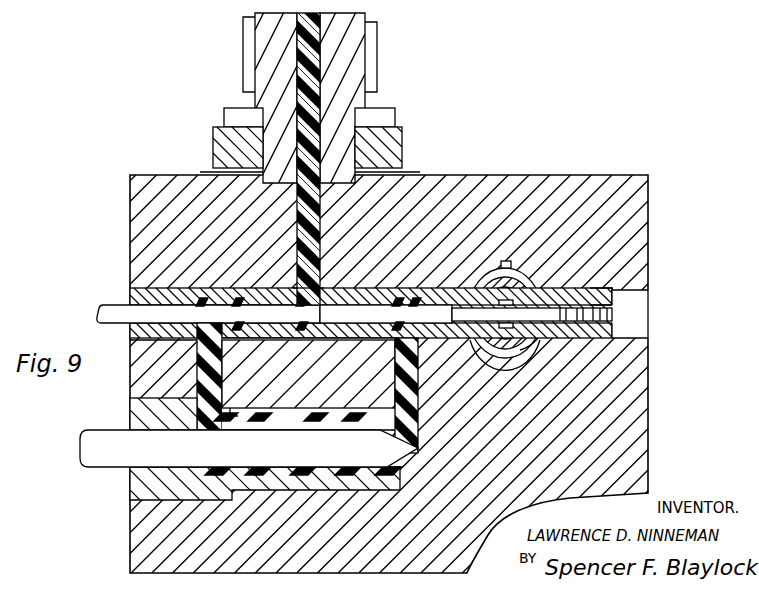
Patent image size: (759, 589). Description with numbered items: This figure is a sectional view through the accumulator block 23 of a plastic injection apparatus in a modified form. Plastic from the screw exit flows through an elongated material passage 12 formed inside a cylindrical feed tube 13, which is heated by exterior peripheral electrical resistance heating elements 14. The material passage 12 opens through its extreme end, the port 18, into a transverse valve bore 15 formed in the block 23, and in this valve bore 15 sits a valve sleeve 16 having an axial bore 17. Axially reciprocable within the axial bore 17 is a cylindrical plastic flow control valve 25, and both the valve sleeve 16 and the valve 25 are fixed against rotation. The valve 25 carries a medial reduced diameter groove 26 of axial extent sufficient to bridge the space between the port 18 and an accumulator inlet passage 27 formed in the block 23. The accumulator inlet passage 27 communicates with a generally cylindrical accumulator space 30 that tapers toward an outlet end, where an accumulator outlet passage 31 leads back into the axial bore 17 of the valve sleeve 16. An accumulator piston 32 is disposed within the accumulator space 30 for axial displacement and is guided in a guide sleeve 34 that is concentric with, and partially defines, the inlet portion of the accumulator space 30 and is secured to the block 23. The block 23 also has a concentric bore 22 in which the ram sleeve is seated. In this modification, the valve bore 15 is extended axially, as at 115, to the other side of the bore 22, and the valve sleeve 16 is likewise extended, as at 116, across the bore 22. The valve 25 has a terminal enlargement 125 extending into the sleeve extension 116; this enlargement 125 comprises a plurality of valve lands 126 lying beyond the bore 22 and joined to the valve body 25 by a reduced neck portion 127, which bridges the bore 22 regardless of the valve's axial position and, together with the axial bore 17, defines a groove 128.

The material passage 12 is at (319, 66).
The cylindrical feed tube 13 is at (268, 75).
The electrical resistance heating elements 14 is at (243, 46).
The transverse valve bore 15 is at (358, 338).
The valve sleeve 16 is at (431, 298).
The axial bore 17 is at (125, 306).
The port 18 is at (321, 279).
The concentric bore 22 is at (528, 348).
The accumulator block 23 is at (584, 175).
The plastic flow control valve 25 is at (368, 322).
The medial reduced diameter groove 26 is at (243, 318).
The accumulator inlet passage 27 is at (222, 370).
The accumulator space 30 is at (284, 478).
The accumulator outlet passage 31 is at (418, 387).
The accumulator piston 32 is at (324, 456).
The guide sleeve 34 is at (140, 488).
The valve sleeve bore extension 115 is at (641, 296).
The valve sleeve extension 116 is at (605, 292).
The terminal enlargement 125 is at (612, 316).
The valve lands 126 is at (598, 324).
The reduced neck portion 127 is at (486, 332).
The groove 128 is at (529, 291).